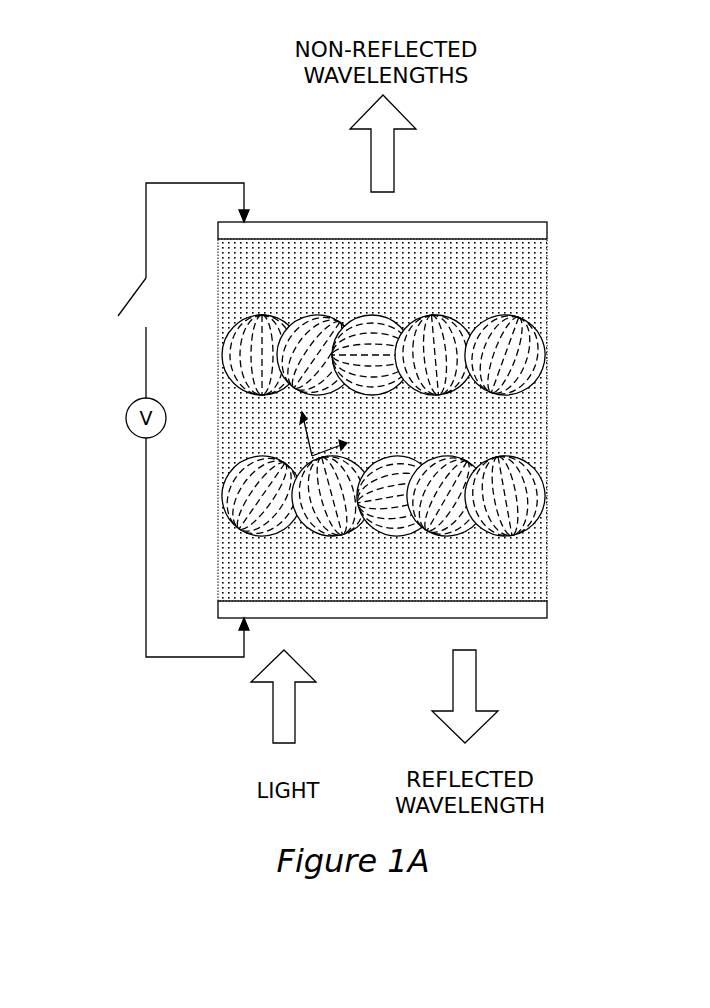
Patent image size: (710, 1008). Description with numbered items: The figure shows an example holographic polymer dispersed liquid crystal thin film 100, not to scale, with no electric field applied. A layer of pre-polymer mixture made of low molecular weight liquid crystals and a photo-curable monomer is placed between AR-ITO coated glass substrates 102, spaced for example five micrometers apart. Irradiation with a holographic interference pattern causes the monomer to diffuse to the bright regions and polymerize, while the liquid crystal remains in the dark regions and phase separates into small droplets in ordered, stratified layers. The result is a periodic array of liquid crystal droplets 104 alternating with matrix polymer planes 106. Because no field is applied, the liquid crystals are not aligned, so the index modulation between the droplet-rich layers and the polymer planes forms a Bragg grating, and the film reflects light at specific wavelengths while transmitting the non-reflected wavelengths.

The holographic polymer dispersed liquid crystal thin film 100 is at (262, 167).
The AR-ITO coated glass substrates 102 is at (533, 231).
The liquid crystal droplets 104 is at (518, 357).
The matrix polymer planes 106 is at (518, 274).